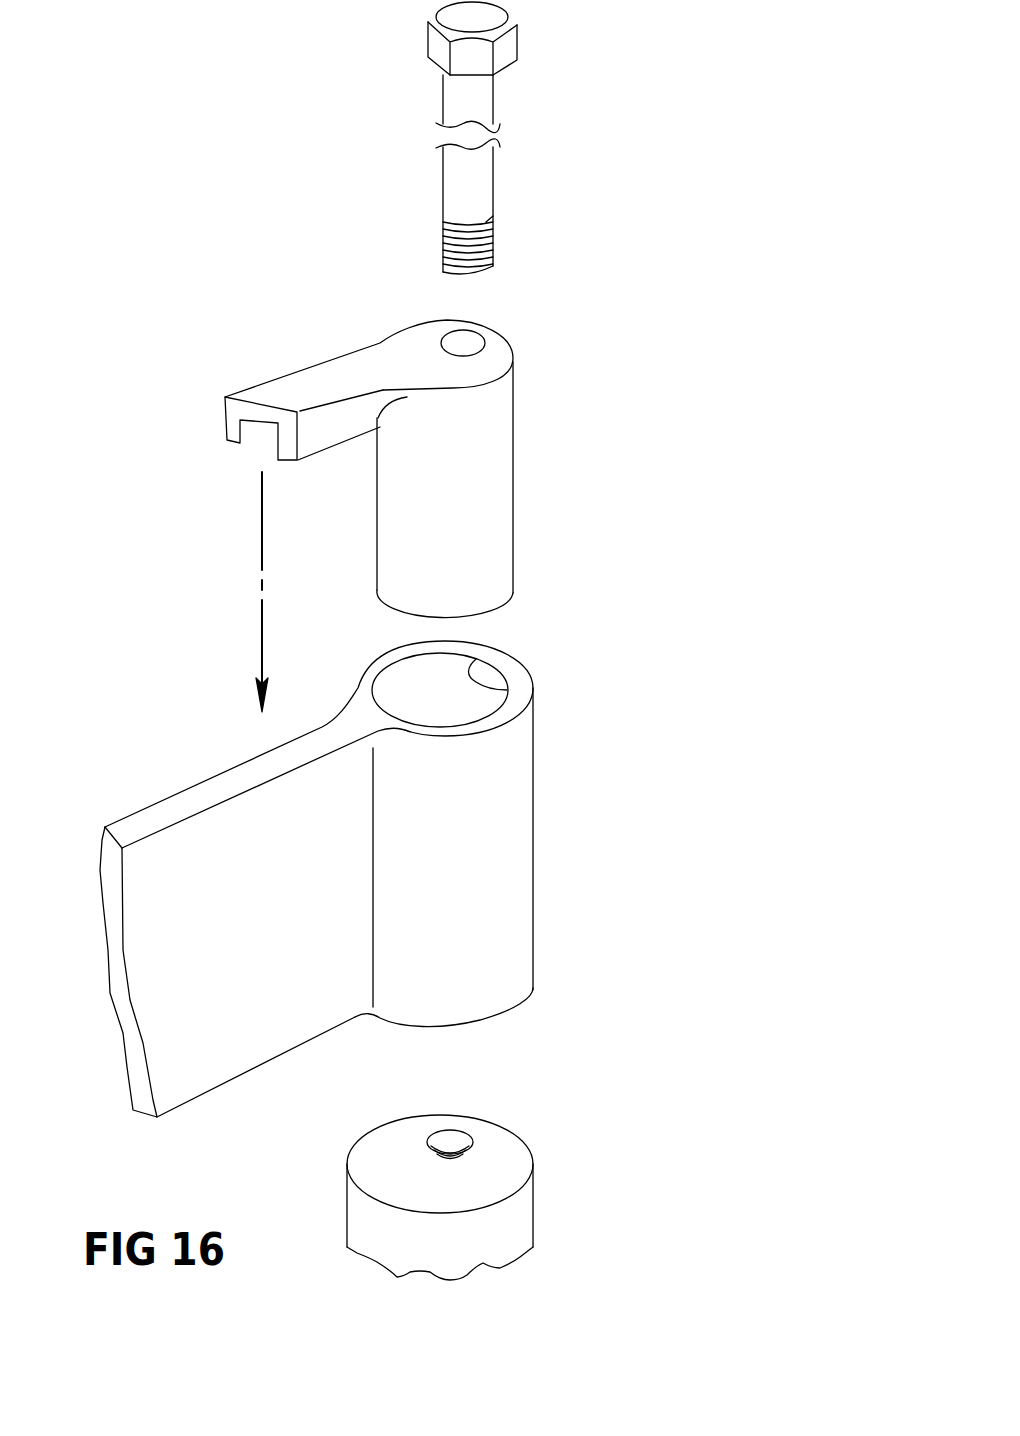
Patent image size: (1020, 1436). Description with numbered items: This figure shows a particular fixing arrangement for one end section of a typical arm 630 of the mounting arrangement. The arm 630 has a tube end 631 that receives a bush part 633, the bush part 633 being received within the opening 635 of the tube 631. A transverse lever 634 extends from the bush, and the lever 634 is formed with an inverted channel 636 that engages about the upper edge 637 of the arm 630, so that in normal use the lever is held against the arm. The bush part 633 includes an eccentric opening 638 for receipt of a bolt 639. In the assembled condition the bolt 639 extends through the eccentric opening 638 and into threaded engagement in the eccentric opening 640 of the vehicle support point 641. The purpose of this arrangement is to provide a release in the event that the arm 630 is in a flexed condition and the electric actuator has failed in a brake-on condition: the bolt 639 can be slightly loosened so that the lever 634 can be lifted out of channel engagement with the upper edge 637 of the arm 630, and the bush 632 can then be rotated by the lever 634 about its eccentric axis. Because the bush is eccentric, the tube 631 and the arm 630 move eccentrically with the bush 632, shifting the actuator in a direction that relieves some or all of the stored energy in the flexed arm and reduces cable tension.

The arm 630 is at (359, 908).
The tube end 631 is at (490, 881).
The bush 632 is at (397, 492).
The bush part 633 is at (478, 560).
The transverse lever 634 is at (300, 383).
The opening 635 is at (507, 690).
The inverted channel 636 is at (258, 435).
The upper edge 637 is at (199, 800).
The eccentric opening 638 is at (465, 342).
The bolt 639 is at (457, 177).
The eccentric opening 640 is at (452, 1140).
The vehicle support point 641 is at (504, 1175).